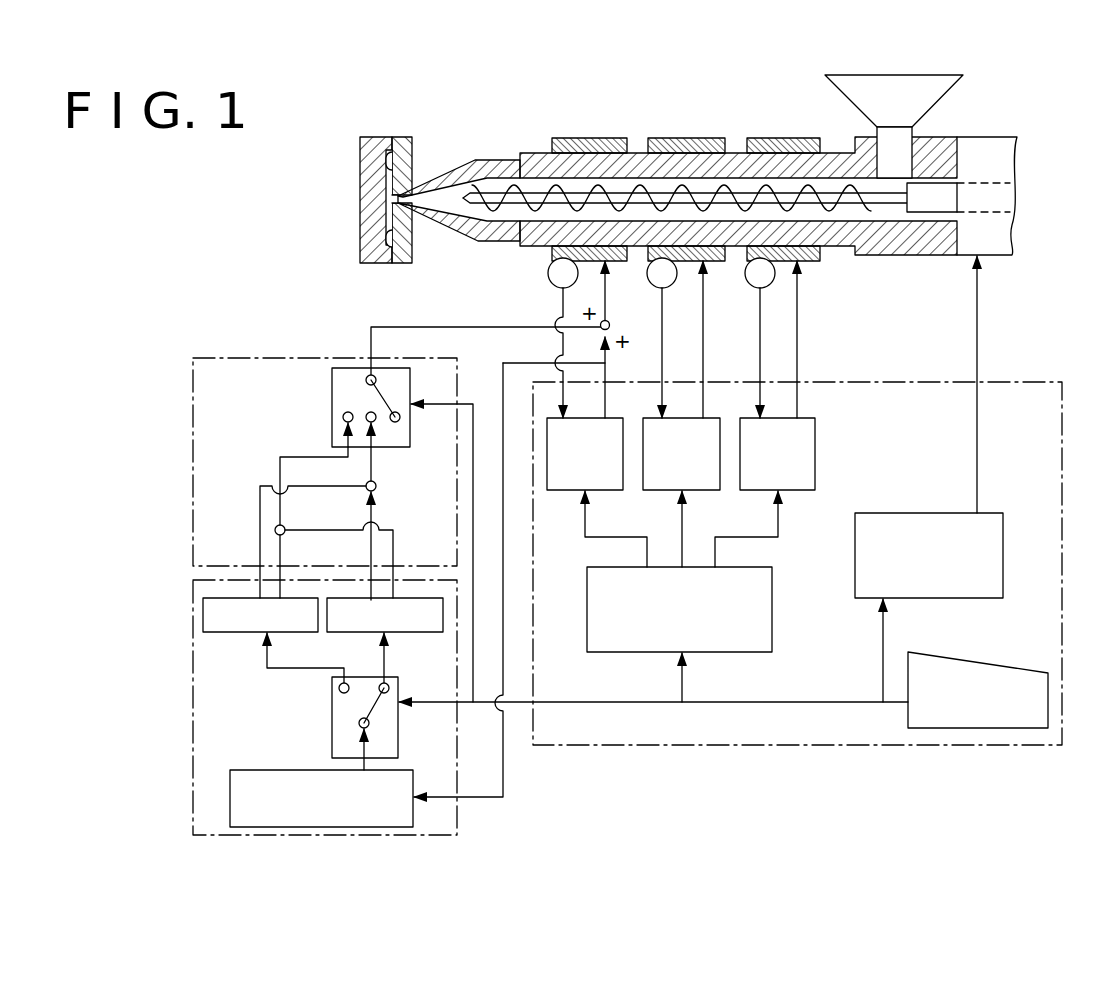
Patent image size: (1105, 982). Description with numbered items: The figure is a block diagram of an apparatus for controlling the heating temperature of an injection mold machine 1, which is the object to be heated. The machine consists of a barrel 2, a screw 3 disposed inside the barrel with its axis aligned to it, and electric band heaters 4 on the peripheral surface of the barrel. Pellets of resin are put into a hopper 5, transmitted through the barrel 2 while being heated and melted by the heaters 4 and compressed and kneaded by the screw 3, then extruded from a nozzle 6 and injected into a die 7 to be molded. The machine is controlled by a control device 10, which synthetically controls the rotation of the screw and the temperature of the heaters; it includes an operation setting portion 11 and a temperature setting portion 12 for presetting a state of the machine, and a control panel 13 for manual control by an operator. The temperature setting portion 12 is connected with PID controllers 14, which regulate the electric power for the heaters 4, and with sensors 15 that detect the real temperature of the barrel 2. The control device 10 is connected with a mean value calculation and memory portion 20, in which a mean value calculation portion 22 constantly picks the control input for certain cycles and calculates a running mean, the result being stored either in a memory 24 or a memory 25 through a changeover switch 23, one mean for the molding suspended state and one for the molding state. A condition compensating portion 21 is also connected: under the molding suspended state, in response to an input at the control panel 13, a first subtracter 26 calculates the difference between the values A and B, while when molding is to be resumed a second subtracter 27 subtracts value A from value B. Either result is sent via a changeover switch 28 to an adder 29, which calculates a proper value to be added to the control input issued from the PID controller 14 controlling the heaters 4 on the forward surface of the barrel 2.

The injection mold machine 1 is at (553, 118).
The barrel 2 is at (833, 250).
The screw 3 is at (860, 208).
The electric band heater 4 is at (787, 138).
The hopper 5 is at (930, 95).
The nozzle 6 is at (440, 203).
The die 7 is at (376, 137).
The control device 10 is at (697, 746).
The operation setting portion 11 is at (893, 512).
The temperature setting portion 12 is at (772, 607).
The control panel 13 is at (997, 662).
The PID controller 14 is at (568, 492).
The sensor 15 is at (548, 276).
The mean value calculation and memory portion 20 is at (435, 835).
The condition compensating portion 21 is at (318, 357).
The mean value calculation portion 22 is at (230, 792).
The changeover switch 23 is at (332, 730).
The memory 24 is at (415, 633).
The memory 25 is at (241, 633).
The first subtracter 26 is at (376, 486).
The second subtracter 27 is at (275, 530).
The changeover switch 28 is at (343, 417).
The adder 29 is at (609, 326).